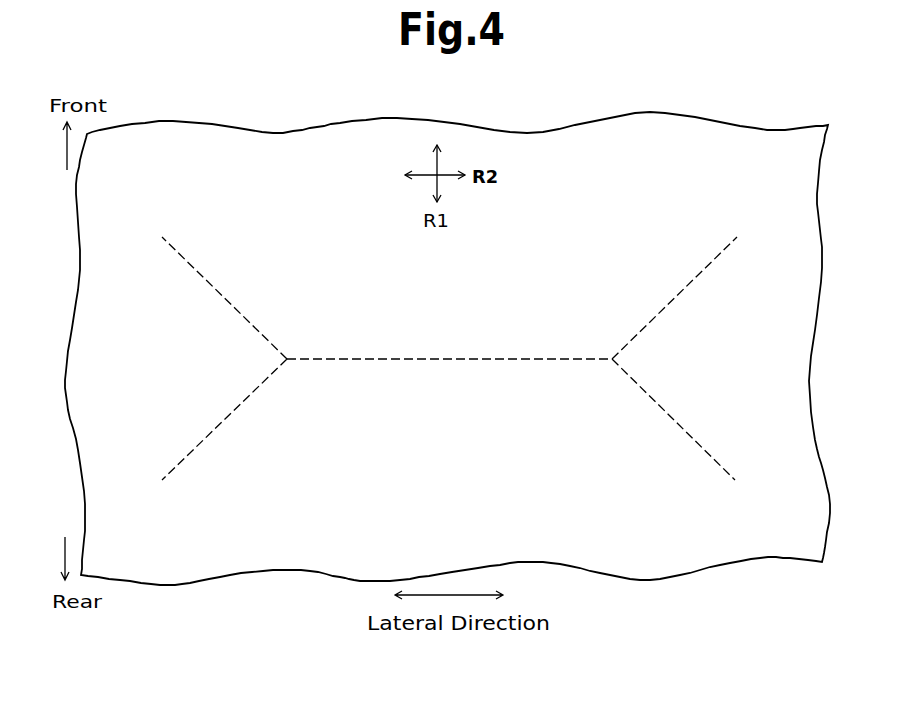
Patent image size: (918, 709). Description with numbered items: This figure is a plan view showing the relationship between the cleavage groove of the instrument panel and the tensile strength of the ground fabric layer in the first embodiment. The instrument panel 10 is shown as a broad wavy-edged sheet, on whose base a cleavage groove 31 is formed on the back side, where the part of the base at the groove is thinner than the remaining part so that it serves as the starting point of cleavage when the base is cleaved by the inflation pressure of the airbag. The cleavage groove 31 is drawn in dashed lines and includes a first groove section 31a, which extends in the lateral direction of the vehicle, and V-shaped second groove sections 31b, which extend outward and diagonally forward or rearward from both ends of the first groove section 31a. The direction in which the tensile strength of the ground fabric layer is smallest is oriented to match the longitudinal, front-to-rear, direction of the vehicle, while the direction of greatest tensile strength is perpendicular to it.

The sheet / panel member 10 is at (309, 556).
The cleavage groove 31 is at (450, 352).
The first groove section 31a is at (435, 360).
The second groove sections 31b is at (241, 313).